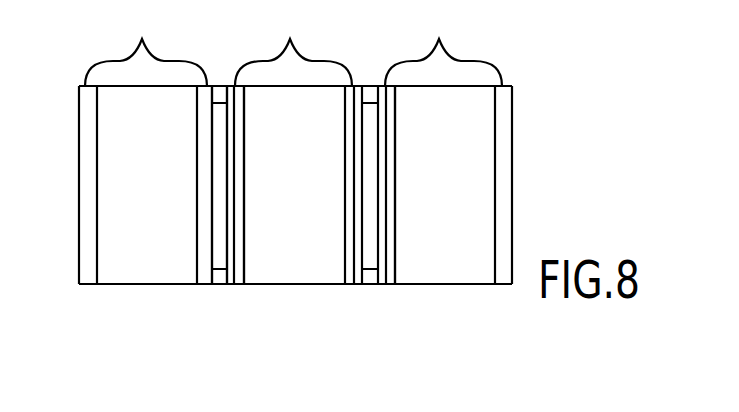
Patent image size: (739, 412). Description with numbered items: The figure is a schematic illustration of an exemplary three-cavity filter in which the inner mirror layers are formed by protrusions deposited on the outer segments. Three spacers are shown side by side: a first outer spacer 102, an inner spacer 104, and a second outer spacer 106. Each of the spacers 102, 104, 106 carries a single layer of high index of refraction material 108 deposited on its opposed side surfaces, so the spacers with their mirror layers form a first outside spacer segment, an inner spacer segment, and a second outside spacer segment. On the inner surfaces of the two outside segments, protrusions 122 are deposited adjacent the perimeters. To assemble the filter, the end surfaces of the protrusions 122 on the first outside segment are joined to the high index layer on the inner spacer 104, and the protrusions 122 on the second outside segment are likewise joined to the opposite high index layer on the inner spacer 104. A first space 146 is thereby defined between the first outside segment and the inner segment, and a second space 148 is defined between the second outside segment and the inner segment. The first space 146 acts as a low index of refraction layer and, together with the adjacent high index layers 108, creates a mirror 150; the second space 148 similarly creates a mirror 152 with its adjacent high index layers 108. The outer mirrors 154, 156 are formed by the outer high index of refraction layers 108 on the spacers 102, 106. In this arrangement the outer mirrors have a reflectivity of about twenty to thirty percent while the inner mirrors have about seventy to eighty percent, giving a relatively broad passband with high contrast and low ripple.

The first outer spacer 102 is at (164, 178).
The inner spacer 104 is at (313, 180).
The second outer spacer 106 is at (463, 179).
The high index of refraction material layer 108 is at (293, 46).
The protrusions 122 is at (219, 85).
The first space 146 is at (222, 195).
The second space 148 is at (370, 157).
The mirror 150 is at (250, 290).
The mirror 152 is at (400, 292).
The outer mirror 154 is at (90, 285).
The outer mirror 156 is at (505, 288).